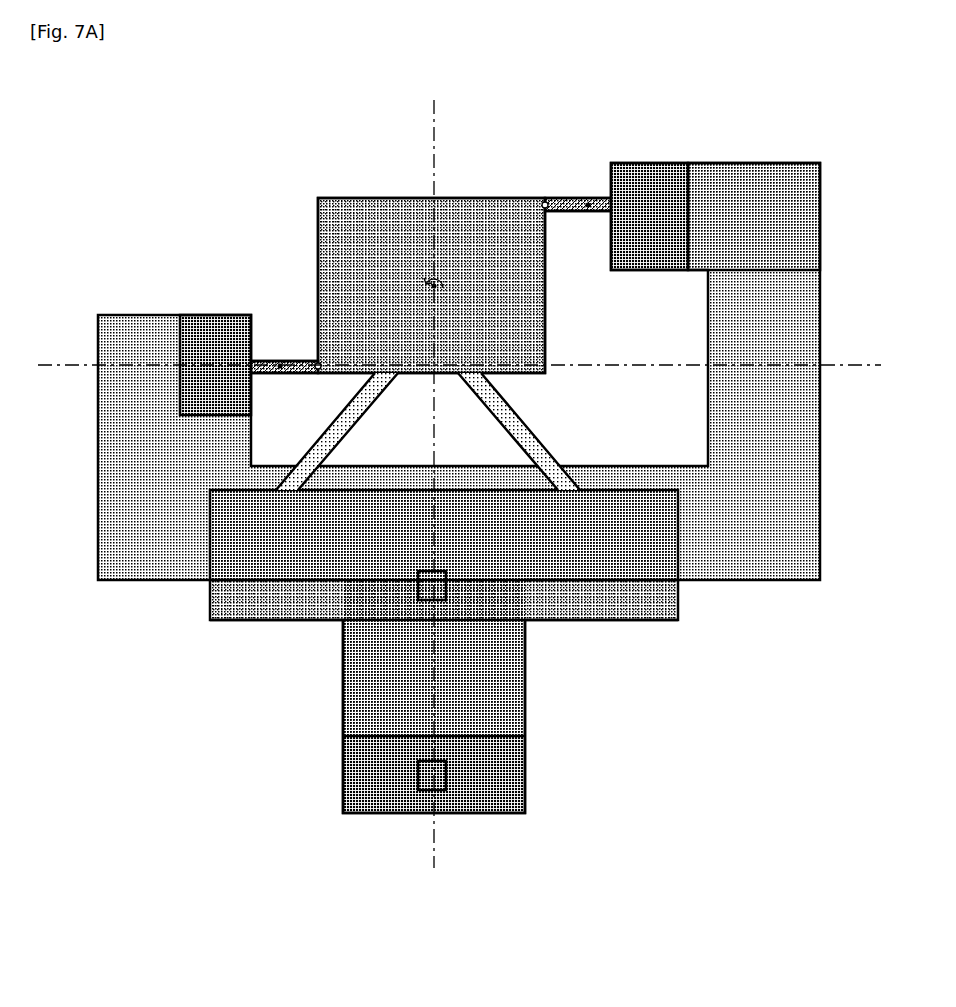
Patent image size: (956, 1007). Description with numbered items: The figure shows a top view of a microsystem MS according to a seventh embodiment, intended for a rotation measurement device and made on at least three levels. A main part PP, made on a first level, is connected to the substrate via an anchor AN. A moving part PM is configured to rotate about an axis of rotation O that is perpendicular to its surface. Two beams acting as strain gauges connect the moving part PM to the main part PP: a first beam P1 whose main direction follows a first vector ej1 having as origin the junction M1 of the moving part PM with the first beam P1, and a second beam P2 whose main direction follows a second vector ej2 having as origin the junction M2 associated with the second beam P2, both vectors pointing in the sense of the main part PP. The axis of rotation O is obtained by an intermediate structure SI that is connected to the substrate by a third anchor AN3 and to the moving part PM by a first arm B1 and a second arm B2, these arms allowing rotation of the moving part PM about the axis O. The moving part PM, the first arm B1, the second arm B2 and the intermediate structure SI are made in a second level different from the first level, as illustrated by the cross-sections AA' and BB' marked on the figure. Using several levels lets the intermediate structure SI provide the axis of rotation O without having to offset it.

The microsystem MS is at (459, 487).
The main part PP is at (137, 328).
The moving part PM is at (378, 207).
The first beam P1 is at (278, 355).
The second beam P2 is at (580, 194).
The junction of the moving part with the first beam M1 is at (328, 388).
The junction of the main part with the second beam M2 is at (534, 186).
The first vector ej1 is at (284, 388).
The second vector ej2 is at (578, 218).
The axis of rotation O is at (439, 270).
The first arm B1 is at (343, 410).
The second arm B2 is at (515, 414).
The intermediate structure SI is at (268, 602).
The third anchor AN3 is at (438, 590).
The anchor AN is at (417, 770).
The cross-section AA' is at (459, 348).
The cross-section BB' is at (457, 484).